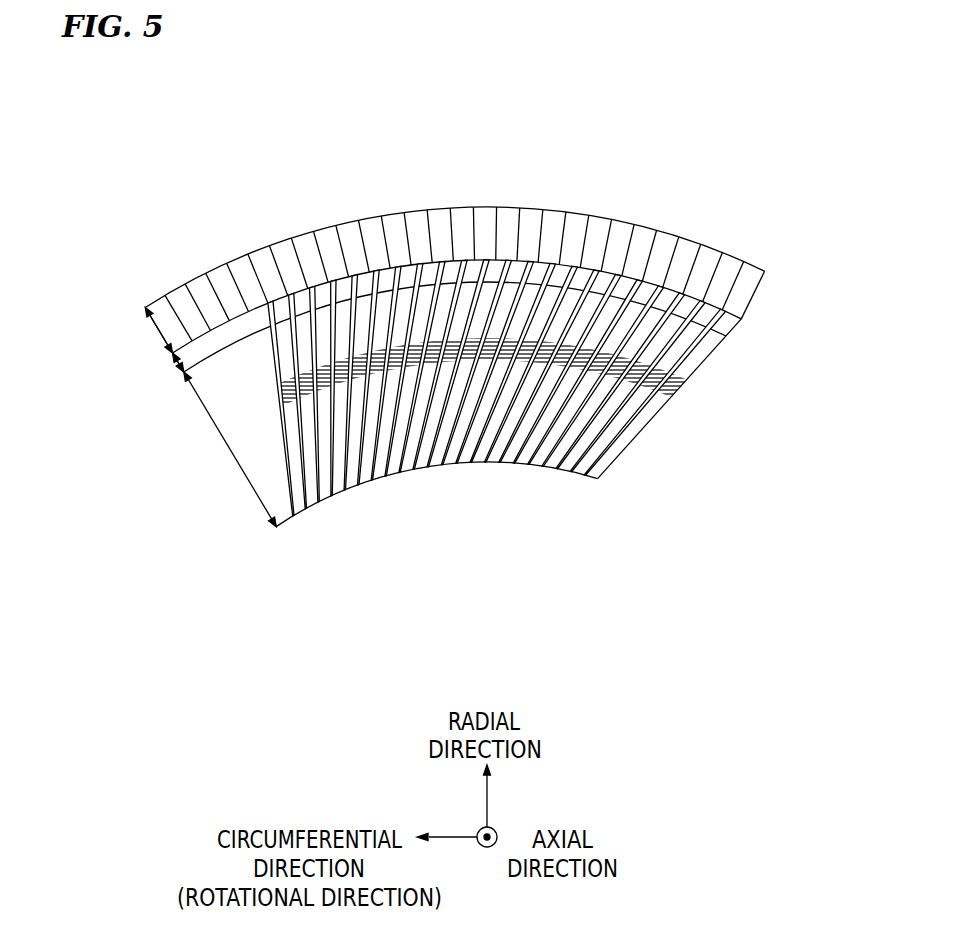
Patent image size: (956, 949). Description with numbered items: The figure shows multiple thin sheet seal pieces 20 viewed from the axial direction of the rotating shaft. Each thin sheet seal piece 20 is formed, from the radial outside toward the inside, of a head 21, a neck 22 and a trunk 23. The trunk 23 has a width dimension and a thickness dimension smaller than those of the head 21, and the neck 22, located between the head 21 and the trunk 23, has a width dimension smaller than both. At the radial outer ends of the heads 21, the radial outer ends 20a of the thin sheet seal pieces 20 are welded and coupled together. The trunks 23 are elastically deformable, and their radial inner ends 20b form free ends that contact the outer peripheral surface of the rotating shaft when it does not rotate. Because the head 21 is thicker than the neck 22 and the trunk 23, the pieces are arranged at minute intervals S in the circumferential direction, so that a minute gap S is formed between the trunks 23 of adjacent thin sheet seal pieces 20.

The thin sheet seal piece 20 is at (430, 200).
The radial outer end 20a is at (758, 268).
The radial inner end 20b is at (588, 481).
The head 21 is at (154, 323).
The neck 22 is at (176, 361).
The trunk 23 is at (231, 452).
The minute interval S is at (450, 300).